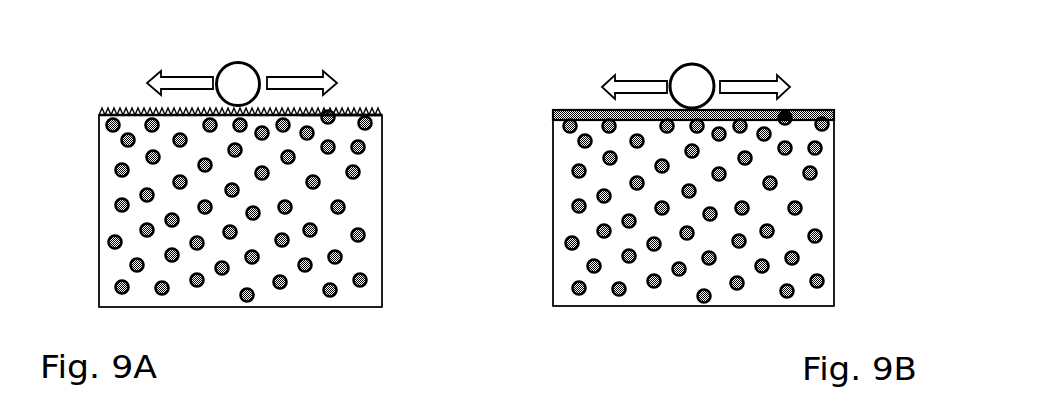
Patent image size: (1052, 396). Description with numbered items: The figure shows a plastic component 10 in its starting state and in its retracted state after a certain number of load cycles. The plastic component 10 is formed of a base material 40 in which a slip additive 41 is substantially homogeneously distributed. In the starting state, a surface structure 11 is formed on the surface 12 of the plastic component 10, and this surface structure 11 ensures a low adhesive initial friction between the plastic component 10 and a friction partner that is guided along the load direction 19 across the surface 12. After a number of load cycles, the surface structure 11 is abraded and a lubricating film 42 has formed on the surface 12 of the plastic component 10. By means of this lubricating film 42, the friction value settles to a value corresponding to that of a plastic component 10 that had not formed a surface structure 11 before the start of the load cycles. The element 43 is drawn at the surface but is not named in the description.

In FIG. 9A, the plastic component 10 is at (80, 218).
In FIG. 9B, the plastic component 10 is at (540, 222).
In FIG. 9A, the surface structure 11 is at (133, 110).
In FIG. 9A, the surface 12 is at (358, 104).
In FIG. 9B, the surface 12 is at (592, 104).
In FIG. 9A, the load direction 19 is at (199, 77).
In FIG. 9B, the load direction 19 is at (640, 80).
In FIG. 9A, the base material 40 is at (363, 198).
In FIG. 9B, the base material 40 is at (818, 208).
In FIG. 9A, the slip additive 41 is at (120, 285).
In FIG. 9B, the slip additive 41 is at (578, 286).
In FIG. 9B, the lubricating film 42 is at (812, 110).
In FIG. 9A, the tool ball 43 is at (238, 70).
In FIG. 9B, the tool ball 43 is at (693, 73).